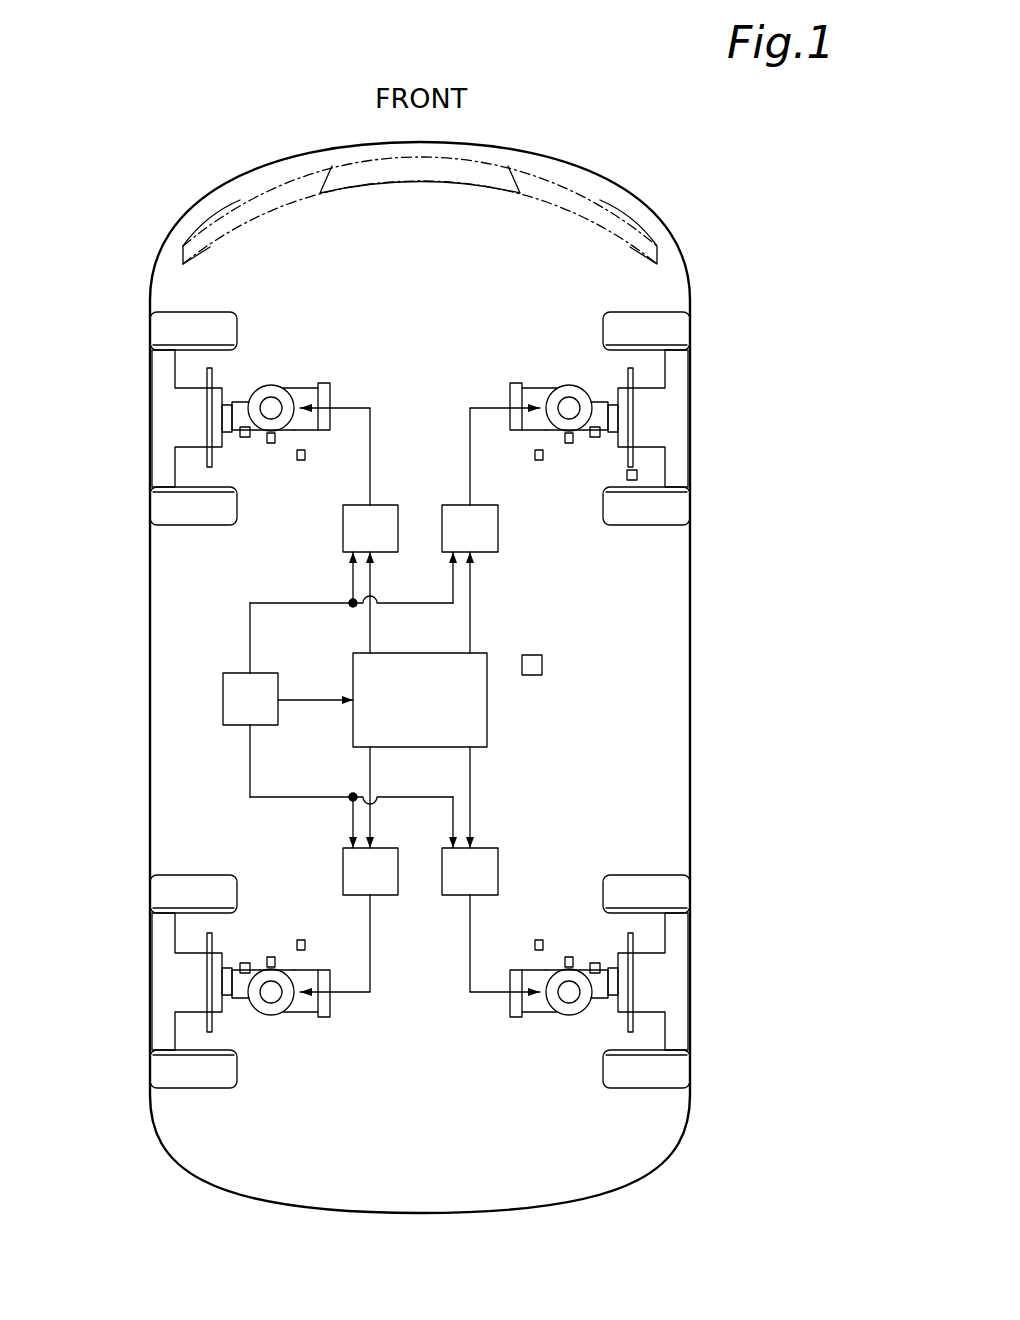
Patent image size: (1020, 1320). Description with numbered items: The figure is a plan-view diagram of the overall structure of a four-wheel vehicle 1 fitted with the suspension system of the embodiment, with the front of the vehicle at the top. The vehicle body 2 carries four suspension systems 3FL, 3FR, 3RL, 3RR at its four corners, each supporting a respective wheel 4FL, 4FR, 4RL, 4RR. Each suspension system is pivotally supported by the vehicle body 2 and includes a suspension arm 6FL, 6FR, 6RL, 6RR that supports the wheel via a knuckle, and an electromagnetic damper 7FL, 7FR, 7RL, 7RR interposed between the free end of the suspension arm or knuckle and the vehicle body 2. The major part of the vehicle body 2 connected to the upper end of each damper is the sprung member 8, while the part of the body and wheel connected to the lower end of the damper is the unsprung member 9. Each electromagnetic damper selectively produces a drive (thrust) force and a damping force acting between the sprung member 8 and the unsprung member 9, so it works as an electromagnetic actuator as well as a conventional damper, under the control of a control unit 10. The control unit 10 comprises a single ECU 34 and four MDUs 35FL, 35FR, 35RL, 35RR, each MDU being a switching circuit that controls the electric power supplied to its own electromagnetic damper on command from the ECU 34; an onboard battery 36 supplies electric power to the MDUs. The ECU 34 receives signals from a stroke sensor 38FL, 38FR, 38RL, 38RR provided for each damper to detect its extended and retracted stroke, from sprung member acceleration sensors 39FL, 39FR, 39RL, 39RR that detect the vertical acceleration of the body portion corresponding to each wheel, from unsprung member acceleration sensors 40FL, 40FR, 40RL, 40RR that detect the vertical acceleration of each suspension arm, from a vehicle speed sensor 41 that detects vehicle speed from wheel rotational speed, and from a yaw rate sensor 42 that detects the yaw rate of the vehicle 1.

The four-wheel vehicle 1 is at (433, 647).
The vehicle body 2 is at (613, 180).
The sprung member 8 is at (667, 240).
The suspension system 3FL is at (211, 410).
The suspension system 3FR is at (641, 410).
The suspension system 3RL is at (213, 993).
The suspension system 3RR is at (642, 994).
The wheel 4FL is at (158, 332).
The wheel 4FR is at (682, 332).
The wheel 4RL is at (158, 896).
The wheel 4RR is at (682, 896).
The suspension arm 6FL is at (313, 382).
The suspension arm 6FR is at (527, 382).
The suspension arm 6RL is at (313, 1018).
The suspension arm 6RR is at (527, 1018).
The electromagnetic damper 7FL is at (269, 386).
The electromagnetic damper 7FR is at (571, 386).
The electromagnetic damper 7RL is at (270, 1013).
The electromagnetic damper 7RR is at (570, 1013).
The unsprung member 9 is at (302, 396).
The control unit 10 is at (349, 700).
The ECU 34 is at (488, 714).
The MDU 35FL is at (343, 543).
The MDU 35FR is at (490, 552).
The MDU 35RL is at (387, 895).
The MDU 35RR is at (492, 848).
The onboard battery 36 is at (222, 698).
The stroke sensor 38FL is at (272, 444).
The stroke sensor 38FR is at (568, 444).
The stroke sensor 38RL is at (272, 956).
The stroke sensor 38RR is at (568, 956).
The sprung member acceleration sensor 39FL is at (301, 461).
The sprung member acceleration sensor 39FR is at (539, 461).
The sprung member acceleration sensor 39RL is at (301, 939).
The sprung member acceleration sensor 39RR is at (539, 939).
The unsprung member acceleration sensor 40FL is at (244, 438).
The unsprung member acceleration sensor 40FR is at (596, 438).
The unsprung member acceleration sensor 40RL is at (244, 962).
The unsprung member acceleration sensor 40RR is at (596, 962).
The vehicle speed sensor 41 is at (638, 475).
The yaw rate sensor 42 is at (543, 665).